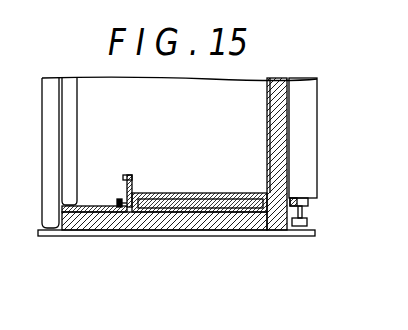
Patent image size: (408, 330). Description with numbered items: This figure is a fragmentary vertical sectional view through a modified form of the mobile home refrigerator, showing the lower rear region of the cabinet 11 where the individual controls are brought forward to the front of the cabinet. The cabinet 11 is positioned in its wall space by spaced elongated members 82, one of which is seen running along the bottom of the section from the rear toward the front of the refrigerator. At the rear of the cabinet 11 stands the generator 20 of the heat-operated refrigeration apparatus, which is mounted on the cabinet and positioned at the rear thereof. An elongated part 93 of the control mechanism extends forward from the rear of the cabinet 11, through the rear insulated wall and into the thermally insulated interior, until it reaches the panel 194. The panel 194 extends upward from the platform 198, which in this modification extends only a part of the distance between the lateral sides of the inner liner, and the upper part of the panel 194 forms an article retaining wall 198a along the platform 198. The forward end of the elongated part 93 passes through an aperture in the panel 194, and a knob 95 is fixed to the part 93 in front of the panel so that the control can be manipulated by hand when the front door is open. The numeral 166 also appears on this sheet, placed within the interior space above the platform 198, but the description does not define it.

The cabinet 11 is at (171, 238).
The generator 20 is at (324, 171).
The spaced elongated member 82 is at (57, 238).
The elongated part 93 is at (208, 196).
The knob 95 is at (117, 203).
The chamber 166 is at (192, 113).
The panel 194 is at (129, 206).
The platform 198 is at (238, 194).
The article retaining wall 198a is at (150, 159).